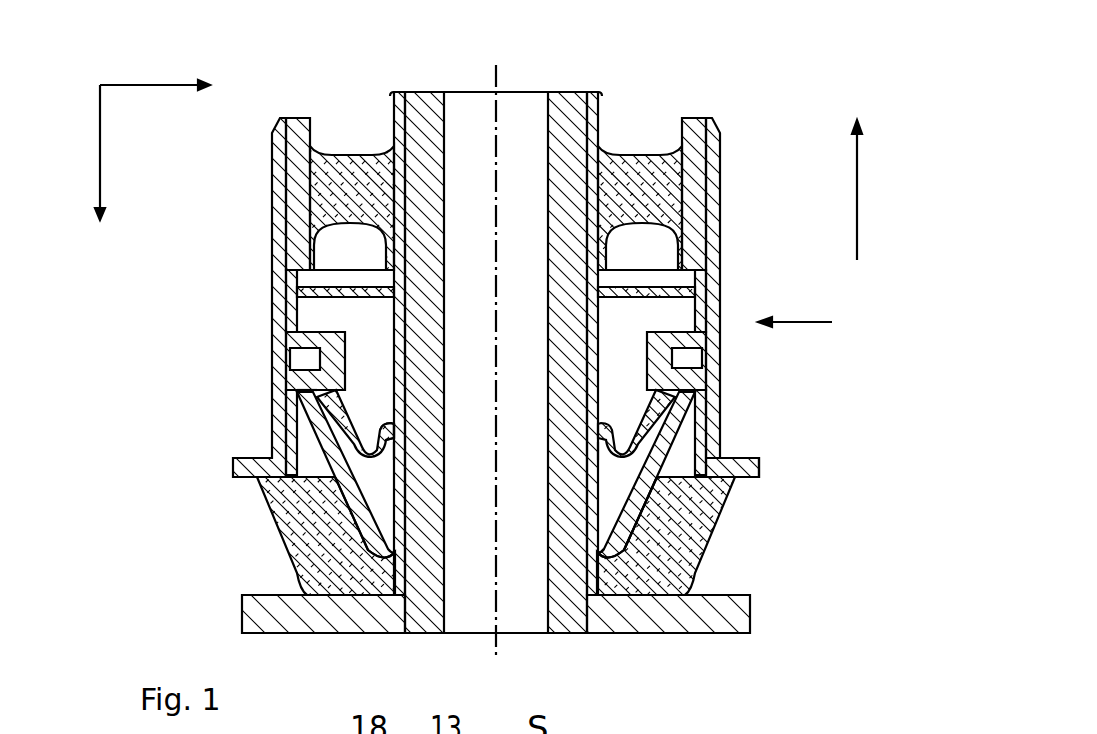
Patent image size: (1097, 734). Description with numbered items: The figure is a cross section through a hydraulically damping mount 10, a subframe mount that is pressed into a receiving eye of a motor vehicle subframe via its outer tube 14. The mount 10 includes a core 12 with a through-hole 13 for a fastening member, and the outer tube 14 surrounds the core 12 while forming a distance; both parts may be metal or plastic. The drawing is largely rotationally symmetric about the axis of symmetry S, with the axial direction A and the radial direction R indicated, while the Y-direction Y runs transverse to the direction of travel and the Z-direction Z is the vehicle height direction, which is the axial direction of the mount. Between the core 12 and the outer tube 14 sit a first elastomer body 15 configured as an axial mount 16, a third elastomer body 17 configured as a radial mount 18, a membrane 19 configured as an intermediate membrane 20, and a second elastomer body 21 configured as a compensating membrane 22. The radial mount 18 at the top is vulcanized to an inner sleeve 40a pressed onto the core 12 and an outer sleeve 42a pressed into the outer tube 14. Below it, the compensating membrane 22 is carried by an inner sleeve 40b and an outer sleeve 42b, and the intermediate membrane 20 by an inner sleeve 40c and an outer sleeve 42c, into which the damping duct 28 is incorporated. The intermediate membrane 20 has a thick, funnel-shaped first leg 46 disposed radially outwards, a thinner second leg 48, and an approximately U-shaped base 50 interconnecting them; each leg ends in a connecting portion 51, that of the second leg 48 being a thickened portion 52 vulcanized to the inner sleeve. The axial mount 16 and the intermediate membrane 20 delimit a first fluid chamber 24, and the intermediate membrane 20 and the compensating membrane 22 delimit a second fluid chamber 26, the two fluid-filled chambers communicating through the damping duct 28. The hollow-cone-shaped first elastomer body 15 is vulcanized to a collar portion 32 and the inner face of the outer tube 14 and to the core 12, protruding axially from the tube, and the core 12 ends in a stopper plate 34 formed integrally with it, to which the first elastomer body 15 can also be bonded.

The hydraulically damping mount 10 is at (752, 106).
The core 12 is at (570, 118).
The through-hole 13 is at (466, 130).
The outer tube 14 is at (710, 282).
The first elastomer body 15 is at (703, 497).
The axial mount 16 is at (690, 525).
The third elastomer body 17 is at (678, 188).
The radial mount 18 is at (646, 176).
The membrane 19 is at (401, 362).
The intermediate membrane 20 is at (375, 400).
The second elastomer body 21 is at (684, 262).
The compensating membrane 22 is at (320, 317).
The first fluid chamber 24 is at (287, 505).
The second fluid chamber 26 is at (293, 380).
The damping duct 28 is at (690, 358).
The collar portion 32 is at (757, 462).
The stopper plate 34 is at (740, 600).
The inner sleeve 40a is at (392, 100).
The inner sleeve 40b is at (290, 290).
The inner sleeve 40c is at (340, 463).
The outer sleeve 42a is at (298, 164).
The outer sleeve 42b is at (290, 293).
The outer sleeve 42c is at (285, 375).
The first leg 46 is at (690, 407).
The second leg 48 is at (605, 430).
The base 50 is at (648, 515).
The connecting portion 51 is at (410, 450).
The thickened portion 52 is at (386, 423).
The axis of symmetry S is at (502, 86).
The axial direction A is at (866, 166).
The radial direction R is at (805, 318).
The Y-direction Y is at (166, 80).
The Z-direction Z is at (108, 192).